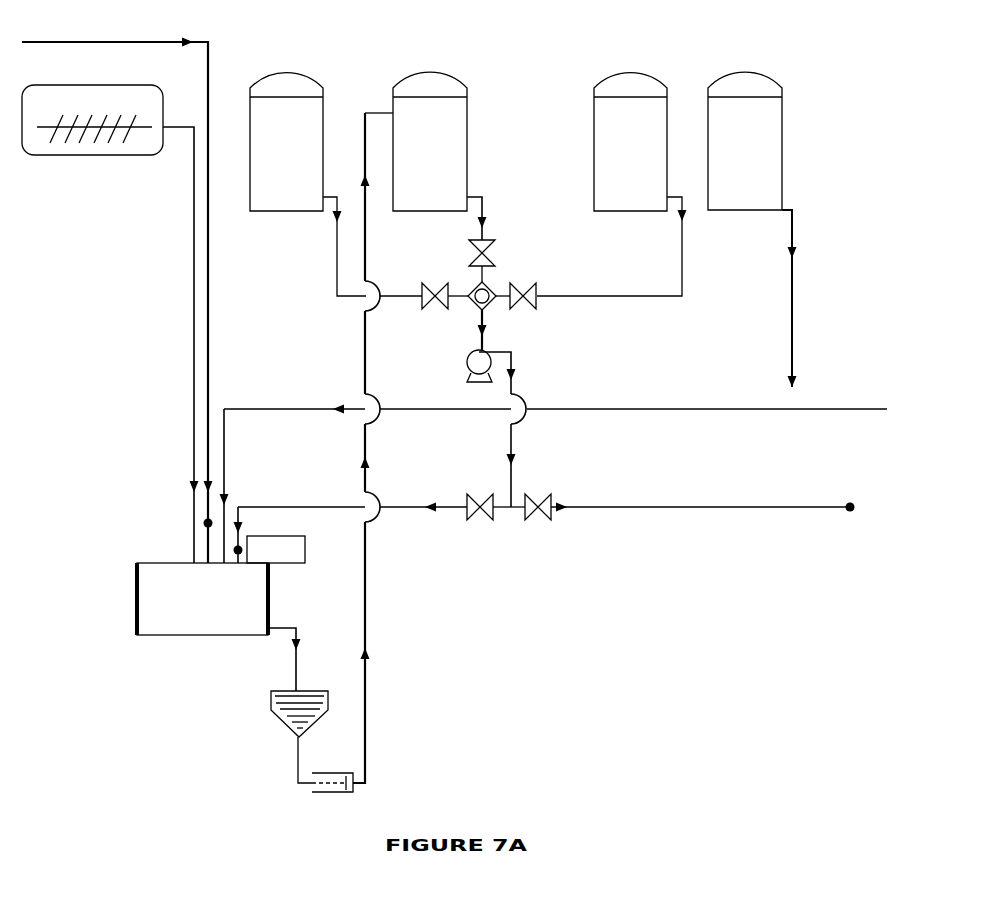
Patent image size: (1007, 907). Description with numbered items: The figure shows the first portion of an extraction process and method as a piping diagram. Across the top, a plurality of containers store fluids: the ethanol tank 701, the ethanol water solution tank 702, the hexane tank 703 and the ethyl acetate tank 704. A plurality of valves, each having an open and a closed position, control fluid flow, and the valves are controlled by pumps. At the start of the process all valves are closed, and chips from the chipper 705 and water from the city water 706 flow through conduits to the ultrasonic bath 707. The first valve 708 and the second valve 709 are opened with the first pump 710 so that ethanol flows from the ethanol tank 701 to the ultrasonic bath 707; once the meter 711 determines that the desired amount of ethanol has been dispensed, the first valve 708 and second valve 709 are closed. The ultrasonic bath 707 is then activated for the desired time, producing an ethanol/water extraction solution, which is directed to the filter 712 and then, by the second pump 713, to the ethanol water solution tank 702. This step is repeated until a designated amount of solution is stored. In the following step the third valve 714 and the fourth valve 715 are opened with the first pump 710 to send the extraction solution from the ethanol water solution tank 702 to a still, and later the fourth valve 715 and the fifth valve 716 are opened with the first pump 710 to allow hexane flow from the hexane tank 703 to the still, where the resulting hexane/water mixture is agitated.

The ethanol tank 701 is at (308, 184).
The ethanol water solution tank 702 is at (426, 156).
The hexane tank 703 is at (612, 184).
The ethyl acetate tank 704 is at (752, 229).
The chipper 705 is at (110, 324).
The city water 706 is at (117, 294).
The ultrasonic bath 707 is at (219, 627).
The first valve 708 is at (438, 308).
The second valve 709 is at (474, 518).
The first pump 710 is at (477, 408).
The meter 711 is at (276, 549).
The filter 712 is at (287, 737).
The second pump 713 is at (334, 791).
The third valve 714 is at (496, 275).
The fourth valve 715 is at (536, 518).
The fifth valve 716 is at (525, 308).